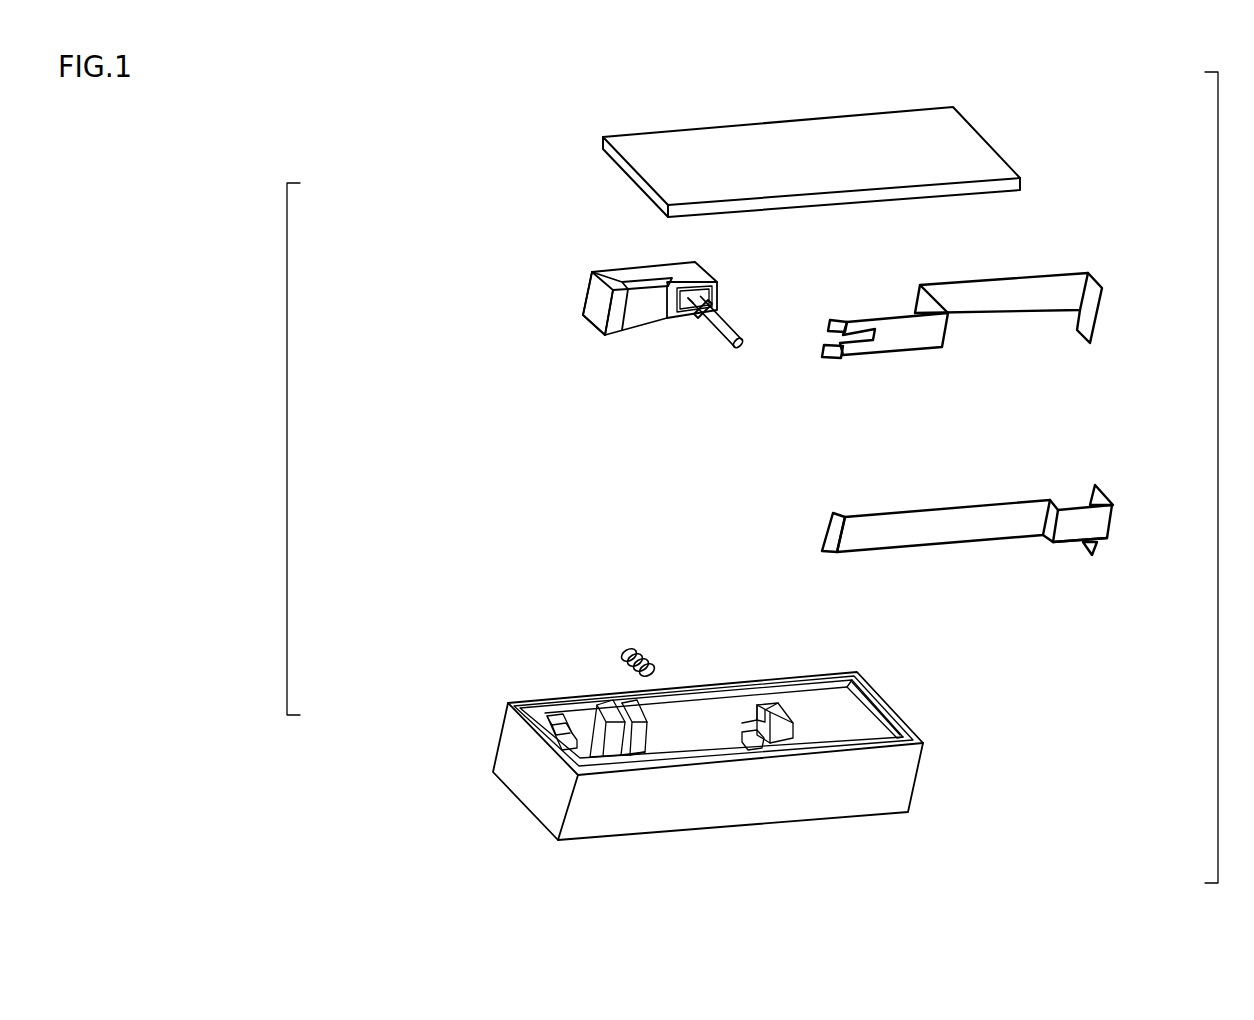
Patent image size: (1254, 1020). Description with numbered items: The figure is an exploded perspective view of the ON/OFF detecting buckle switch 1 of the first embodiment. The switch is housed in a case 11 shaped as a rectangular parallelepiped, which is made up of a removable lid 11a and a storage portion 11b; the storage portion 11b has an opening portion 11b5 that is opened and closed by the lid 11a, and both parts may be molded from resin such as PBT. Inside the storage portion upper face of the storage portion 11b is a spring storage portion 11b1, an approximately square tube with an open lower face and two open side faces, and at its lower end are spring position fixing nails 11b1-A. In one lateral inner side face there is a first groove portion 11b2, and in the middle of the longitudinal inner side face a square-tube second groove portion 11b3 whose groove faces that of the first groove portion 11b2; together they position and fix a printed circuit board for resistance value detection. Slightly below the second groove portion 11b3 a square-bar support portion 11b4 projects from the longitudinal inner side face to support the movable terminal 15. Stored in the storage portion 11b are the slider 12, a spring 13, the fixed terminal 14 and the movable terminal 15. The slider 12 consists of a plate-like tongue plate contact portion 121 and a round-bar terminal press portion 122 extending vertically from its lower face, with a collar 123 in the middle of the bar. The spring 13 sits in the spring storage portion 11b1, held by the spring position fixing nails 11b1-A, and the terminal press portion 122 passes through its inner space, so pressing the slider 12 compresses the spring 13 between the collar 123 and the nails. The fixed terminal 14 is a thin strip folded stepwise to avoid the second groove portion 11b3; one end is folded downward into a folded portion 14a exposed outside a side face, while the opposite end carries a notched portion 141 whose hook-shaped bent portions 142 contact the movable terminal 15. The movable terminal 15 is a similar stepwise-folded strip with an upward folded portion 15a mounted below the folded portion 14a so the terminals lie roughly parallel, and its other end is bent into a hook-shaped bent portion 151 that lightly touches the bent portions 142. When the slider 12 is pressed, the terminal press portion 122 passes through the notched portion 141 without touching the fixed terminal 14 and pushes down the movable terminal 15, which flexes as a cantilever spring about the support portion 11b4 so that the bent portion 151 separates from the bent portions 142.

The ON/OFF detecting buckle switch 1 is at (1218, 489).
The case 11 is at (287, 449).
The lid 11a is at (603, 141).
The storage portion 11b is at (500, 743).
The spring storage portion 11b1 is at (613, 700).
The spring position fixing nails 11b1-A is at (637, 763).
The first groove portion 11b2 is at (547, 715).
The second groove portion 11b3 is at (777, 700).
The support portion 11b4 is at (743, 722).
The opening portion 11b5 is at (872, 723).
The slider 12 is at (592, 272).
The tongue plate contact portion 121 is at (592, 306).
The terminal press portion 122 is at (737, 350).
The collar 123 is at (700, 322).
The spring 13 is at (632, 648).
The fixed terminal 14 is at (987, 317).
The folded portion 14a is at (1103, 313).
The notched portion 141 is at (828, 328).
The bent portions 142 is at (840, 363).
The movable terminal 15 is at (1027, 498).
The folded portion 15a is at (1100, 552).
The bent portion 151 is at (834, 553).